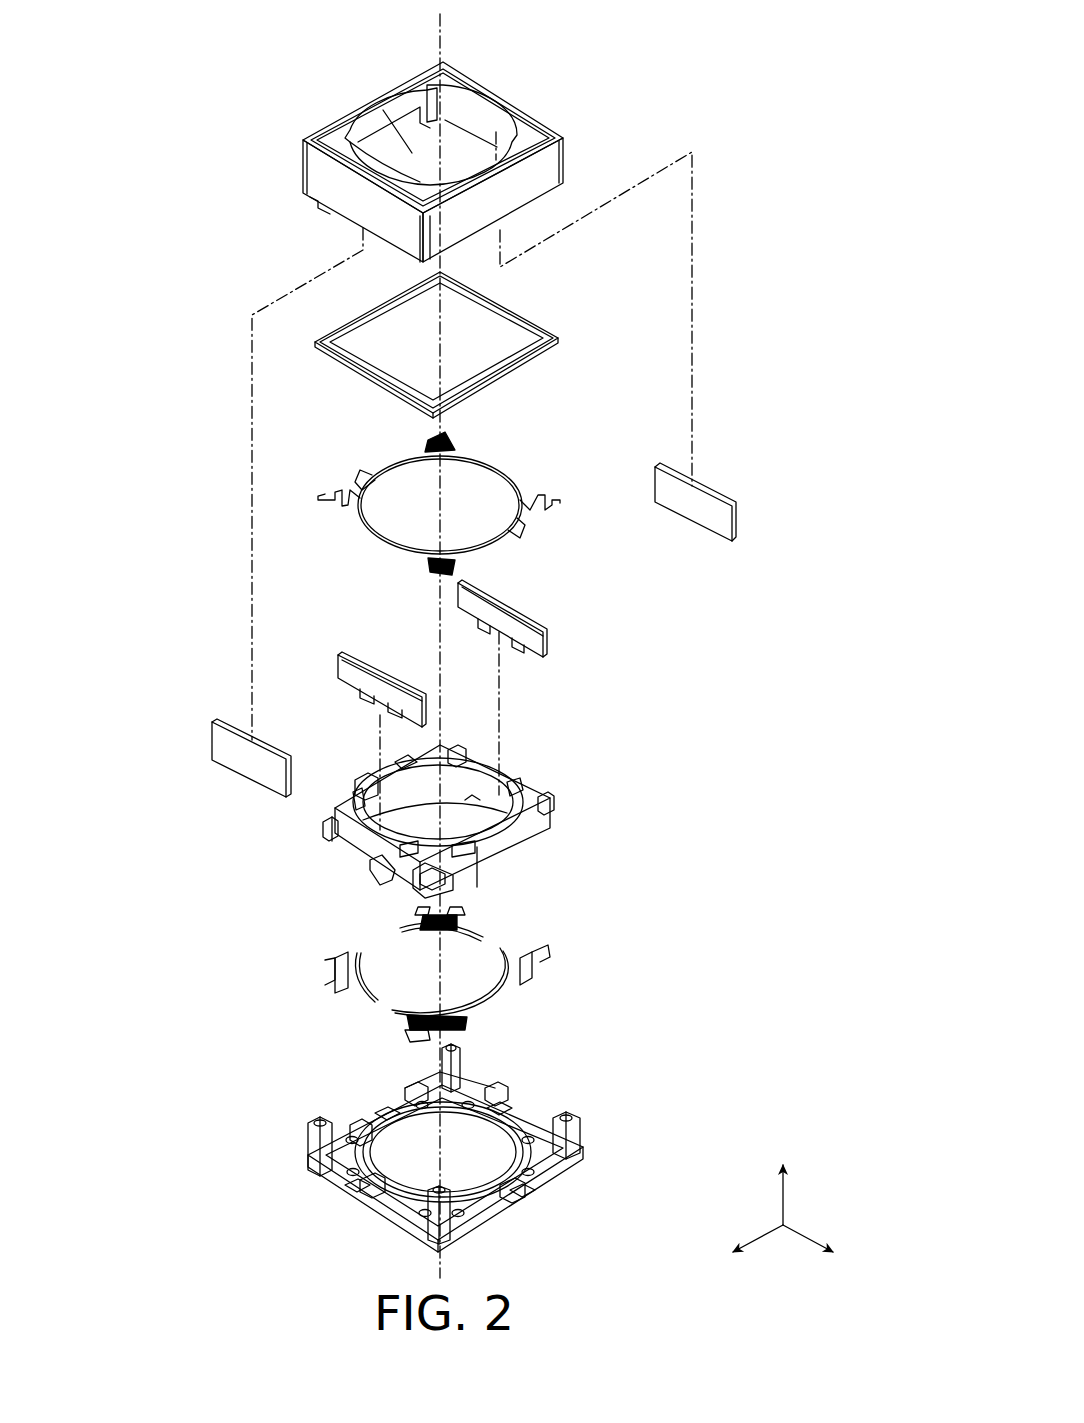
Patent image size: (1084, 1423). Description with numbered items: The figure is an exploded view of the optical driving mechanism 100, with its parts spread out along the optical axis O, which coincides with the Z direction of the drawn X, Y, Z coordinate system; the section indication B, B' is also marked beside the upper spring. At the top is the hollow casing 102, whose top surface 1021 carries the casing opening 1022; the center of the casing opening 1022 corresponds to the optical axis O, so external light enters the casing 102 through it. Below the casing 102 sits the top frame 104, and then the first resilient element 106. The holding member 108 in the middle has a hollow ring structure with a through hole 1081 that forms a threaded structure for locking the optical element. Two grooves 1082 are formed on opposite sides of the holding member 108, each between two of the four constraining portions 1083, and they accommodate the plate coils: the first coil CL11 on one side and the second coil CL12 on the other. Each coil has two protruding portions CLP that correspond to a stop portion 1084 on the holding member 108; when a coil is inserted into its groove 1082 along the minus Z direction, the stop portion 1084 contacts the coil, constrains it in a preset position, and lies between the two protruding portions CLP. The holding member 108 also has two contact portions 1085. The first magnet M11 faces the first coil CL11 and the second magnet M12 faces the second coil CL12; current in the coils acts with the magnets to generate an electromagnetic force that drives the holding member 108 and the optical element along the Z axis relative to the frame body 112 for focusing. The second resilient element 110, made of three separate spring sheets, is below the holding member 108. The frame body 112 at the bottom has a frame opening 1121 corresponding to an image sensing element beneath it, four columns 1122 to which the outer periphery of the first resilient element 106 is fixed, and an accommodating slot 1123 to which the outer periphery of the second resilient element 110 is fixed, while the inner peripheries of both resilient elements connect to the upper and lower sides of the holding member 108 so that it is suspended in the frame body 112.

The optical driving mechanism 100 is at (672, 85).
The casing 102 is at (472, 151).
The top surface 1021 is at (543, 130).
The casing opening 1022 is at (373, 103).
The top frame 104 is at (540, 317).
The first resilient element 106 is at (500, 478).
The holding member 108 is at (444, 781).
The through hole 1081 is at (473, 787).
The groove 1082 is at (453, 750).
The constraining portion 1083 is at (462, 748).
The stop portion 1084 is at (373, 873).
The contact portion 1085 is at (352, 822).
The second resilient element 110 is at (528, 998).
The frame body 112 is at (432, 1148).
The frame opening 1121 is at (477, 1163).
The column 1122 is at (310, 1145).
The accommodating slot 1123 is at (353, 1128).
The first magnet M11 is at (247, 762).
The second magnet M12 is at (717, 500).
The first coil CL11 is at (337, 665).
The second coil CL12 is at (547, 566).
The protruding portion CLP is at (490, 636).
The optical axis O is at (447, 22).
The section line B is at (464, 553).
The section line B' is at (576, 624).
The X axis X is at (744, 1248).
The Y axis Y is at (819, 1248).
The Z-axis Z is at (782, 1180).